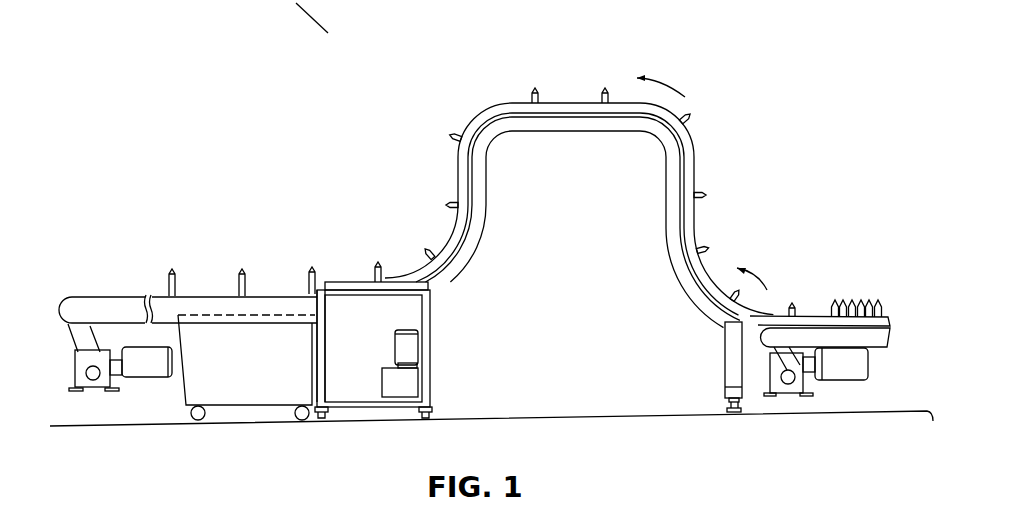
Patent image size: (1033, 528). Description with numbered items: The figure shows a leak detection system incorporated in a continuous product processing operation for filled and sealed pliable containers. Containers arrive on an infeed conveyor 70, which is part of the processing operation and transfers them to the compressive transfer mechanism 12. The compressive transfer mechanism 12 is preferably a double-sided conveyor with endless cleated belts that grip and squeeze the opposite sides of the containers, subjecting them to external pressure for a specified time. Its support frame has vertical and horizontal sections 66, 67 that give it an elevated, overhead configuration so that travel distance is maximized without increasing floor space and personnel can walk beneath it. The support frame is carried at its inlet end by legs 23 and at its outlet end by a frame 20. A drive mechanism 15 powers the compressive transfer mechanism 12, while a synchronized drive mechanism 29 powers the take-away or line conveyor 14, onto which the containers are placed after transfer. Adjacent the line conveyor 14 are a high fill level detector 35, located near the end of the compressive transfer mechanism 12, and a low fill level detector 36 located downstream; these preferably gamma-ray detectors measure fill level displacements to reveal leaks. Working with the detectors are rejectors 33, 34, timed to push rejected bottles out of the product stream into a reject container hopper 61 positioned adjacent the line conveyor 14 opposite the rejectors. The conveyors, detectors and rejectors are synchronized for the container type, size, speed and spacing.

The compressive transfer mechanism 12 is at (728, 80).
The take-away conveyor 14 is at (107, 296).
The drive mechanism 15 is at (400, 353).
The frame 20 is at (426, 346).
The support structure or legs 23 is at (735, 362).
The synchronized drive mechanism 29 is at (133, 378).
The rejector 33 is at (313, 266).
The rejector 34 is at (207, 286).
The high fill level detector 35 is at (338, 267).
The low fill level detector 36 is at (272, 271).
The reject container hopper 61 is at (238, 403).
The vertical sections 66 is at (432, 189).
The horizontal sections 67 is at (572, 88).
The infeed conveyor 70 is at (886, 326).